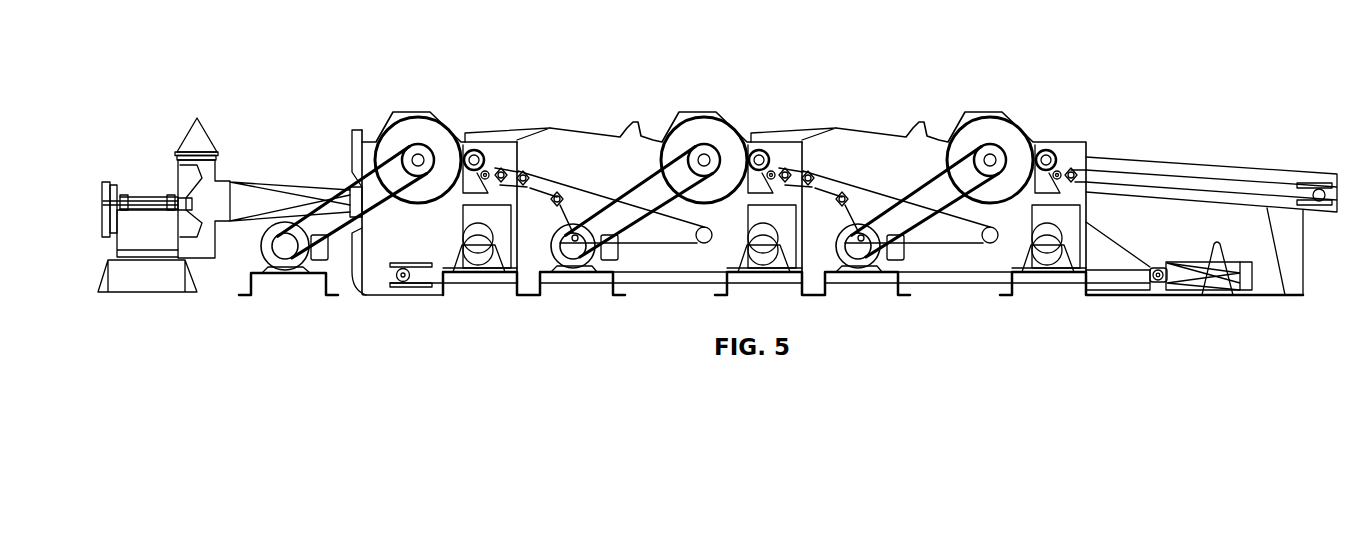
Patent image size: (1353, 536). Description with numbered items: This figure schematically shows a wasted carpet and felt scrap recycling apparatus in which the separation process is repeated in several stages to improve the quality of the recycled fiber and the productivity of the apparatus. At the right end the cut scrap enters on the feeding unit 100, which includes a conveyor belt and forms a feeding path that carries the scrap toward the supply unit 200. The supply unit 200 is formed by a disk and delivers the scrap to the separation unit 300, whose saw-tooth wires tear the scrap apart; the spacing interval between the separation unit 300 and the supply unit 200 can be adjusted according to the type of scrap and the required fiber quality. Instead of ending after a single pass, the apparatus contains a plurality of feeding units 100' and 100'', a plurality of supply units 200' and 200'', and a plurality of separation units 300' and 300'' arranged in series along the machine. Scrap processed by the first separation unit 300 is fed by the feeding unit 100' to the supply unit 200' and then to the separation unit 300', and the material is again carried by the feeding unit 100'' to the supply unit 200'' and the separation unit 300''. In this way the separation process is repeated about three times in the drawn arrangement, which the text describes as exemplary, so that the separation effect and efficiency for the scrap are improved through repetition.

The feeding unit 100 is at (1204, 138).
The feeding unit 100' is at (882, 163).
The feeding unit 100'' is at (596, 166).
The supply unit 200 is at (1067, 131).
The supply unit 200' is at (785, 123).
The supply unit 200'' is at (505, 126).
The separation unit 300 is at (942, 146).
The separation unit 300' is at (656, 148).
The separation unit 300'' is at (382, 156).